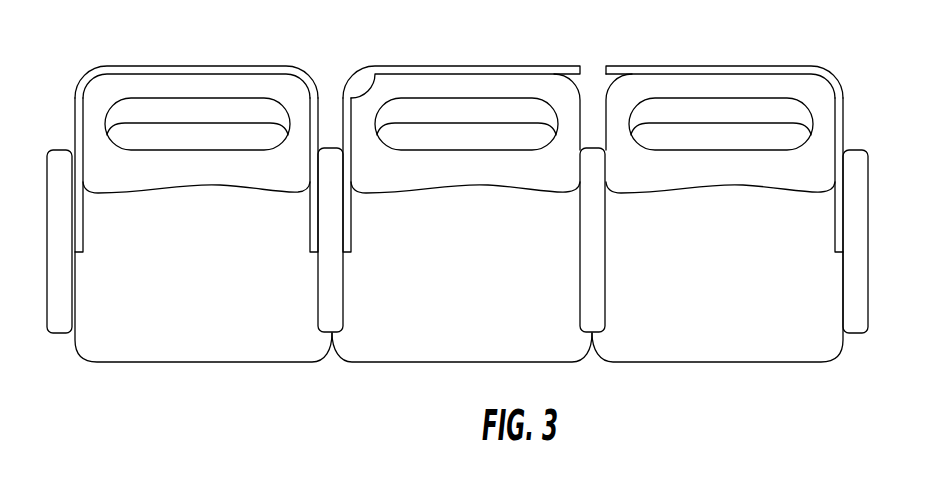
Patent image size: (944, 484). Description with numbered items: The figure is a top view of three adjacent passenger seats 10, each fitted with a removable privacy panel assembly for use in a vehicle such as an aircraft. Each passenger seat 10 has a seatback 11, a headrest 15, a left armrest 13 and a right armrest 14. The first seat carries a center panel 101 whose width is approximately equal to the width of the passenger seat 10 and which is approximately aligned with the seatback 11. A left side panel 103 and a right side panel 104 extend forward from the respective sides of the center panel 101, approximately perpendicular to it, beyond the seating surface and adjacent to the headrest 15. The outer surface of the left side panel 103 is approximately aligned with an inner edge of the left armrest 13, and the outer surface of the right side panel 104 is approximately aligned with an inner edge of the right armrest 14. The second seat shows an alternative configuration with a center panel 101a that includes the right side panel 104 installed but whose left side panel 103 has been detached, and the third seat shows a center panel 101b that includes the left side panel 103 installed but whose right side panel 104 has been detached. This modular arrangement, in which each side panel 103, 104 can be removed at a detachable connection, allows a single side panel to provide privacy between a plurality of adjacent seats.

The passenger seat 10 is at (217, 345).
The seatback 11 is at (107, 175).
The left armrest 13 is at (320, 288).
The right armrest 14 is at (68, 283).
The headrest 15 is at (176, 133).
The center panel 101 is at (162, 66).
The center panel 101a is at (430, 66).
The center panel 101b is at (690, 66).
The left side panel 103 is at (308, 212).
The right side panel 104 is at (78, 140).